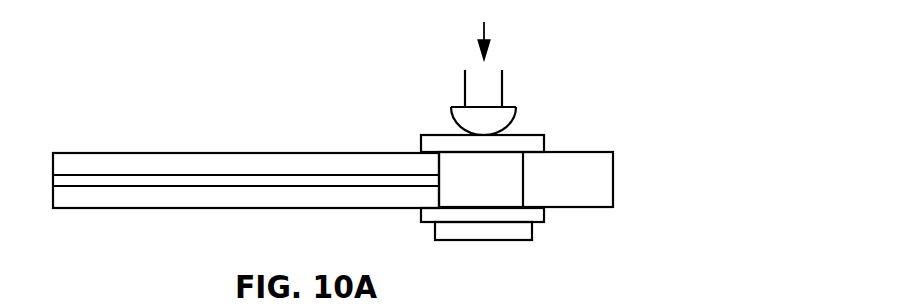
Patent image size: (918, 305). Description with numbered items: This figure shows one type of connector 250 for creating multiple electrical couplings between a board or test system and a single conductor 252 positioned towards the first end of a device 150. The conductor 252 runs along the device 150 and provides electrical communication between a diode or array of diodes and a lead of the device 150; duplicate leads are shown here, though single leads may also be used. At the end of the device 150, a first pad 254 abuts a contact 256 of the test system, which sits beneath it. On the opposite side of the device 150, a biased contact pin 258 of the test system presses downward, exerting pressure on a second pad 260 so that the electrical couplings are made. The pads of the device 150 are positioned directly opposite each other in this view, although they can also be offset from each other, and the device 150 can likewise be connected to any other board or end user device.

The device 150 is at (200, 152).
The single conductor 252 is at (295, 175).
The connector 250 is at (610, 108).
The second pad 260 is at (421, 148).
The first pad 254 is at (546, 213).
The contact 256 is at (502, 240).
The biased contact pin 258 is at (502, 88).